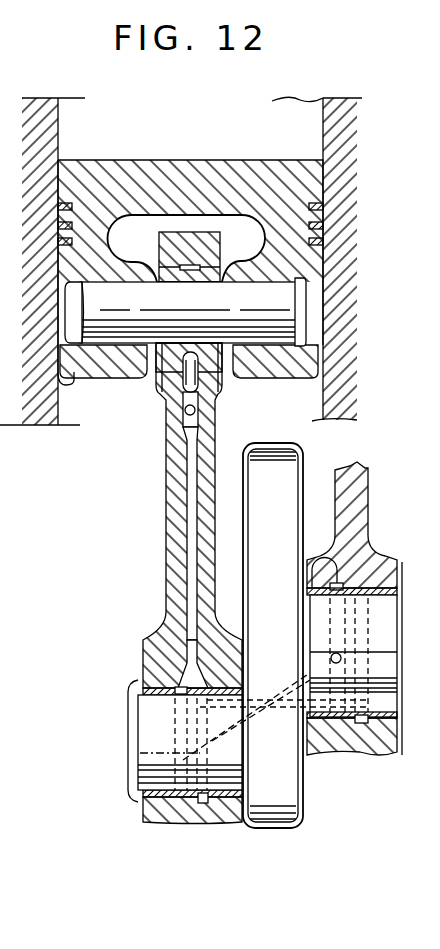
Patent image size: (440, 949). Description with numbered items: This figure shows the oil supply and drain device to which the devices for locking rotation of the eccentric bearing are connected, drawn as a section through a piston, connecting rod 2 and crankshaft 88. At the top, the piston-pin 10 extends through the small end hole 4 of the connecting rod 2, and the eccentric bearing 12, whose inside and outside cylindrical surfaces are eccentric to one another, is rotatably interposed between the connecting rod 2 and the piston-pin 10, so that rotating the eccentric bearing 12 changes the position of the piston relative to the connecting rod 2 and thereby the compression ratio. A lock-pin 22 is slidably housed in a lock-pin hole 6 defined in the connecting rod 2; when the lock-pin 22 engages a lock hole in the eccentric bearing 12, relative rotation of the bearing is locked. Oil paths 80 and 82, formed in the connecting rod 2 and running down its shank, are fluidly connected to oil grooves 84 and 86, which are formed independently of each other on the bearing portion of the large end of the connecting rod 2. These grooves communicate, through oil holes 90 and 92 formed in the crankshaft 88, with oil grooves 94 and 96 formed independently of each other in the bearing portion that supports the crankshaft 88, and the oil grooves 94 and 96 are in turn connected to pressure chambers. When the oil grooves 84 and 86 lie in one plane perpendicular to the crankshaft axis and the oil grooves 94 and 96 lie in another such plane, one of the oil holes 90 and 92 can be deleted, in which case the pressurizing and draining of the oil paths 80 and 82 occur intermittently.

The connecting rod 2 is at (185, 515).
The small end hole 4 is at (222, 245).
The lock-pin hole 6 is at (208, 418).
The piston-pin 10 is at (280, 298).
The eccentric bearing 12 is at (157, 362).
The lock-pin 22 is at (200, 378).
The oil path 80 is at (193, 463).
The oil path 82 is at (203, 670).
The oil groove 84 is at (176, 687).
The oil groove 86 is at (205, 806).
The crankshaft 88 is at (142, 727).
The oil hole 90 is at (247, 722).
The oil hole 92 is at (330, 727).
The oil groove 94 is at (318, 560).
The oil groove 96 is at (360, 723).